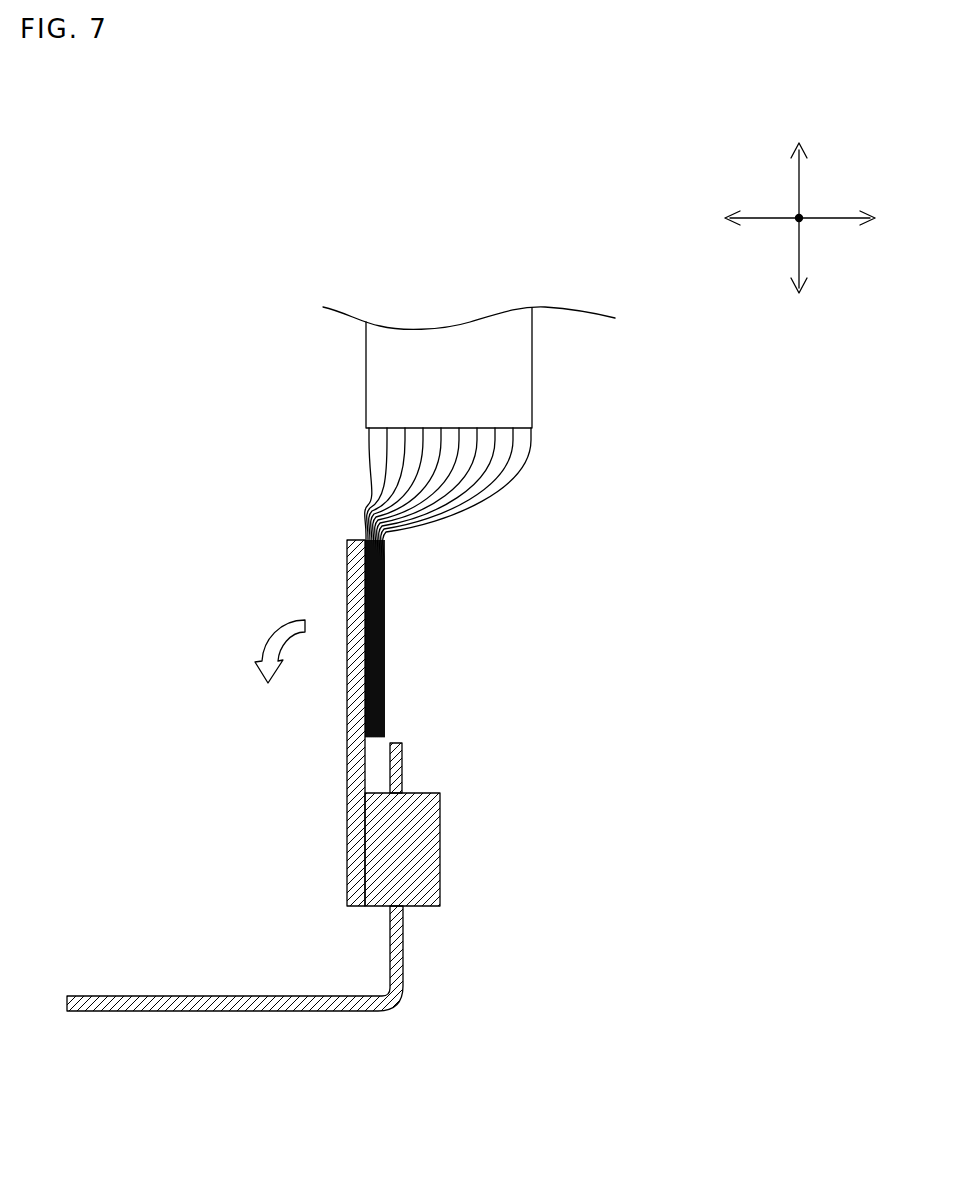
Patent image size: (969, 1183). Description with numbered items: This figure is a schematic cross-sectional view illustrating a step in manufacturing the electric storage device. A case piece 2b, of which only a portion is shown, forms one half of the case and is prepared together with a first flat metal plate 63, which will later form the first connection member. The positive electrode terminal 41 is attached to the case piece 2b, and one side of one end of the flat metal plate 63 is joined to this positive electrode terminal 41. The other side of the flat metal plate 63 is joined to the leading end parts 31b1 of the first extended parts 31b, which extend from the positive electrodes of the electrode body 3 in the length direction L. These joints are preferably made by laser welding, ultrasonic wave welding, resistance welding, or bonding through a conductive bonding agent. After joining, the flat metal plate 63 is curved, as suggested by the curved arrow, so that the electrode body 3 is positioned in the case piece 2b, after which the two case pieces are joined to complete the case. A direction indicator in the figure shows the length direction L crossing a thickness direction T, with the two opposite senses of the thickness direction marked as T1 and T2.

The electrode body 3 is at (538, 372).
The first extended part 31b is at (532, 475).
The leading end part 31b1 is at (385, 645).
The first flat metal plate 63 is at (347, 718).
The positive electrode terminal 41 is at (440, 840).
The case piece 2b is at (403, 953).
The first thickness direction T1 is at (800, 199).
The second thickness direction T2 is at (806, 318).
The length direction L is at (832, 218).
The thickness direction T is at (800, 240).